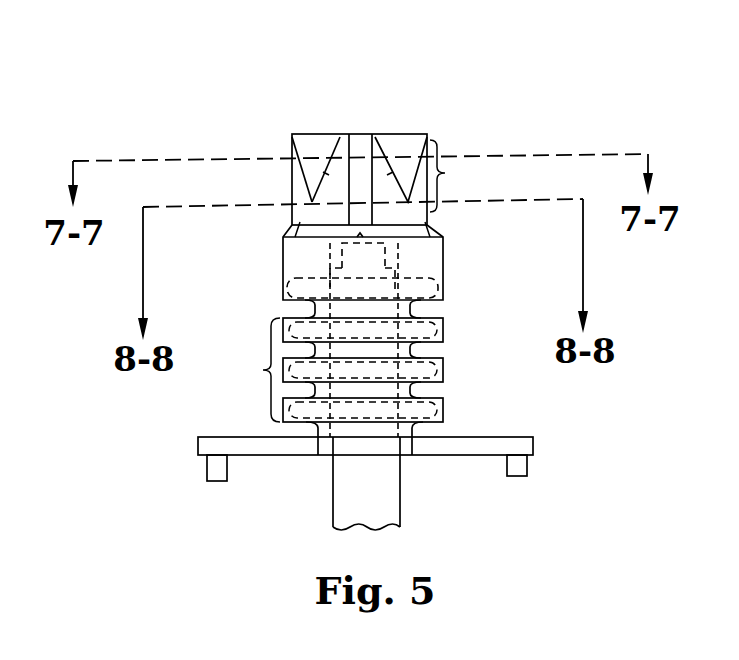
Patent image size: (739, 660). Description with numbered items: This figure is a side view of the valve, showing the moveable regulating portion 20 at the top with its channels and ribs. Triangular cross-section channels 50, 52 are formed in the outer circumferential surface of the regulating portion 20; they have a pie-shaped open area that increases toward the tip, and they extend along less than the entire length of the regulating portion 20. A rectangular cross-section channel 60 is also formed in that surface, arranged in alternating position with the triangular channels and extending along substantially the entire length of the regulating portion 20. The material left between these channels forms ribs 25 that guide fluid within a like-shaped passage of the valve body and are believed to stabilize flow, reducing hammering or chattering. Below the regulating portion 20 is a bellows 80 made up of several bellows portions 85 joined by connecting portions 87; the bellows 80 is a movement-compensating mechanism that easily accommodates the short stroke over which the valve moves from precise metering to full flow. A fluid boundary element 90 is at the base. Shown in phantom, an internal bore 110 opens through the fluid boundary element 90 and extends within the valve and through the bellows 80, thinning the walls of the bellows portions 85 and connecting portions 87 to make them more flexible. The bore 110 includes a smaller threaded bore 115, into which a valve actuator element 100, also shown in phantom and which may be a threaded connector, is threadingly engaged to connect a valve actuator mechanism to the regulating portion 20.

The regulating portion 20 is at (454, 176).
The ribs 25 is at (343, 134).
The triangular cross-section channel 50 is at (410, 140).
The triangular cross-section channel 52 is at (306, 138).
The rectangular cross-section channel 60 is at (358, 134).
The bellows 80 is at (254, 370).
The bellows portions 85 is at (440, 337).
The connecting portions 87 is at (413, 350).
The fluid boundary element 90 is at (467, 455).
The valve actuator element 100 is at (342, 258).
The internal bore 110 is at (396, 433).
The threaded bore 115 is at (340, 273).